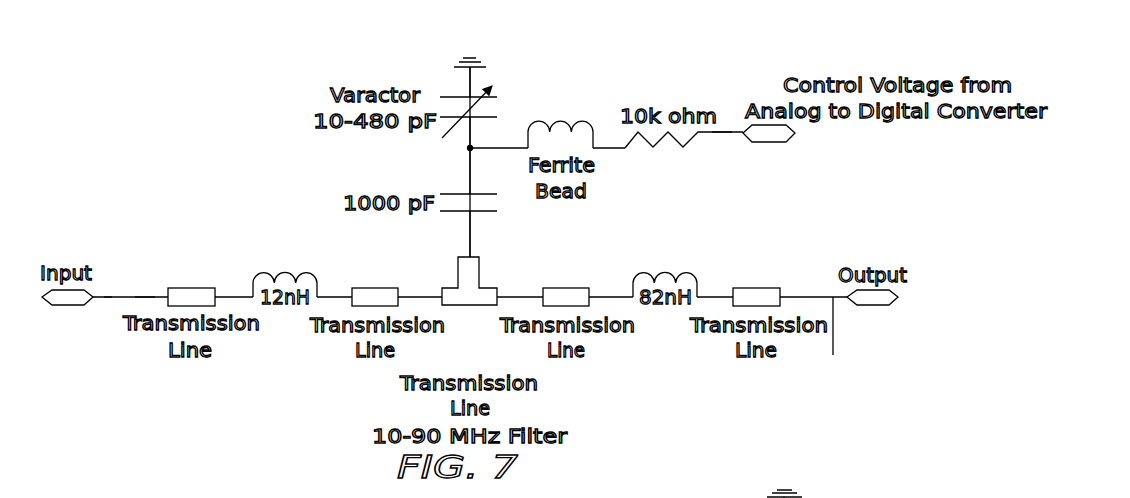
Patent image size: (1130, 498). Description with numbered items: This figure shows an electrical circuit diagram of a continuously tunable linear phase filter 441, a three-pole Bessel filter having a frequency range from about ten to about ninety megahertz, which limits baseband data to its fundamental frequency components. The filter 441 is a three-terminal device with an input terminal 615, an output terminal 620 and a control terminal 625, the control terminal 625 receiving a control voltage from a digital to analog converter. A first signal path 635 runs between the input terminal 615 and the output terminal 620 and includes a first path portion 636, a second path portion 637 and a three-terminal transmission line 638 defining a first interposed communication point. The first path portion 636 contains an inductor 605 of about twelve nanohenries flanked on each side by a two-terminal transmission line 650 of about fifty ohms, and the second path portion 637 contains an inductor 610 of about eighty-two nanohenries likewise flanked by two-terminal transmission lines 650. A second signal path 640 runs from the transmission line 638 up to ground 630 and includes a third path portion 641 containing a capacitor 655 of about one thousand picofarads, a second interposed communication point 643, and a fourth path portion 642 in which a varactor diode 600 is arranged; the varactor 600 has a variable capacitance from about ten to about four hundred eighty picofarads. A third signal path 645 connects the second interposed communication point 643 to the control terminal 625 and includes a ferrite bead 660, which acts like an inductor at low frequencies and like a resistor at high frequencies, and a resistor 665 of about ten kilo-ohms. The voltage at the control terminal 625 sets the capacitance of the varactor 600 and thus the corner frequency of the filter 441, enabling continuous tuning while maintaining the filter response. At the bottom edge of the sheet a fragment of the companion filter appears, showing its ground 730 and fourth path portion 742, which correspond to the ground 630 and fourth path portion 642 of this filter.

The continuously tunable linear phase filter 441 is at (237, 167).
The varactor diode 600 is at (443, 132).
The inductor 605 is at (258, 273).
The inductor 610 is at (688, 272).
The input terminal 615 is at (62, 307).
The output terminal 620 is at (873, 307).
The control terminal 625 is at (787, 142).
The ground 630 is at (498, 48).
The first signal path 635 is at (108, 300).
The first path portion 636 is at (145, 297).
The second path portion 637 is at (837, 341).
The three-terminal transmission line 638 is at (462, 305).
The second signal path 640 is at (474, 248).
The third path portion 641 is at (468, 226).
The fourth path portion 642 is at (467, 83).
The second interposed communication point 643 is at (468, 148).
The third signal path 645 is at (723, 135).
The two-terminal transmission line 650 is at (205, 288).
The capacitor 655 is at (490, 194).
The ferrite bead 660 is at (570, 120).
The resistor 665 is at (660, 148).
The ground 730 is at (817, 477).
The fourth path portion 742 is at (752, 497).